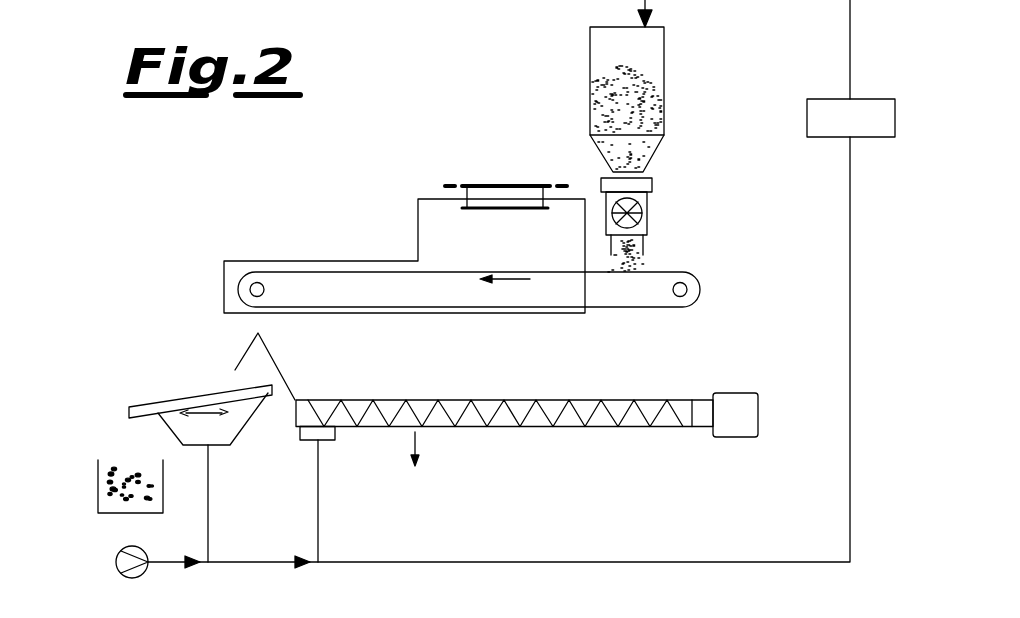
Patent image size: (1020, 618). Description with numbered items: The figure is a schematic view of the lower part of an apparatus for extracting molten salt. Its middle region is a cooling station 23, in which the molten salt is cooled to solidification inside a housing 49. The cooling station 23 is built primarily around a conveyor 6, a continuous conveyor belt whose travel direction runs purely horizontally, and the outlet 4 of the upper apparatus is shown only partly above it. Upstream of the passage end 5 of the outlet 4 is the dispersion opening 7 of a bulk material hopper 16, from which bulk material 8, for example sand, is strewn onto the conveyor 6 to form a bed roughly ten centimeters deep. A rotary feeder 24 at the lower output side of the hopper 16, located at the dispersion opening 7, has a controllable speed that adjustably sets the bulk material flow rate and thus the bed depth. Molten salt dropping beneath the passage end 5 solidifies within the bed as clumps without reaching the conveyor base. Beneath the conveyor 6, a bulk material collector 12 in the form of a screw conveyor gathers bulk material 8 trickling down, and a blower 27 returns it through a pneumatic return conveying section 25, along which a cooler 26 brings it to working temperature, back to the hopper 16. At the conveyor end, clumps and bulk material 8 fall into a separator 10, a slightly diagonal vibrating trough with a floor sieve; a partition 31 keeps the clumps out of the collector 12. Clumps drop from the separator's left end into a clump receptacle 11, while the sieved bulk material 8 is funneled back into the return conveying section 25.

The outlet 4 is at (404, 222).
The passage end 5 is at (478, 216).
The conveyor 6 is at (645, 333).
The dispersion opening 7 is at (660, 245).
The bulk material 8 is at (635, 104).
The separator 10 is at (132, 388).
The clump receptacle 11 is at (90, 486).
The bulk material collector 12 is at (573, 427).
The bulk material hopper 16 is at (663, 68).
The cooling station 23 is at (290, 256).
The rotary feeder 24 is at (632, 213).
The pneumatic return conveying section 25 is at (742, 550).
The cooler 26 is at (806, 117).
The blower 27 is at (118, 554).
The partition 31 is at (250, 340).
The housing 49 is at (430, 314).